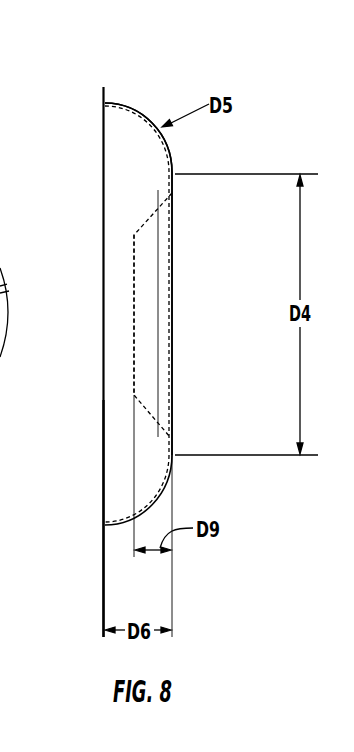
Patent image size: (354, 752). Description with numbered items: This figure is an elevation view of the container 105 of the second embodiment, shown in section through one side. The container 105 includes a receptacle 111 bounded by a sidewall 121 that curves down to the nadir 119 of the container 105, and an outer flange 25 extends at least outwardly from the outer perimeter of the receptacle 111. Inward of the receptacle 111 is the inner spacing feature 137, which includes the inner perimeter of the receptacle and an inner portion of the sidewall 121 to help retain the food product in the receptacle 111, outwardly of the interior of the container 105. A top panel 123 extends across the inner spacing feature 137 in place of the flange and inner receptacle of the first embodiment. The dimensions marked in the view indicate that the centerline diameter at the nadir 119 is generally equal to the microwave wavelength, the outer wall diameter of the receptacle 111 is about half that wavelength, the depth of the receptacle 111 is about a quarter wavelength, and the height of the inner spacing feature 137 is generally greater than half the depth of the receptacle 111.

The outer flange 25 is at (103, 96).
The container 105 is at (256, 91).
The receptacle 111 is at (80, 490).
The nadir 119 is at (172, 270).
The sidewall 121 is at (104, 103).
The top panel 123 is at (136, 334).
The inner spacing feature 137 is at (148, 198).